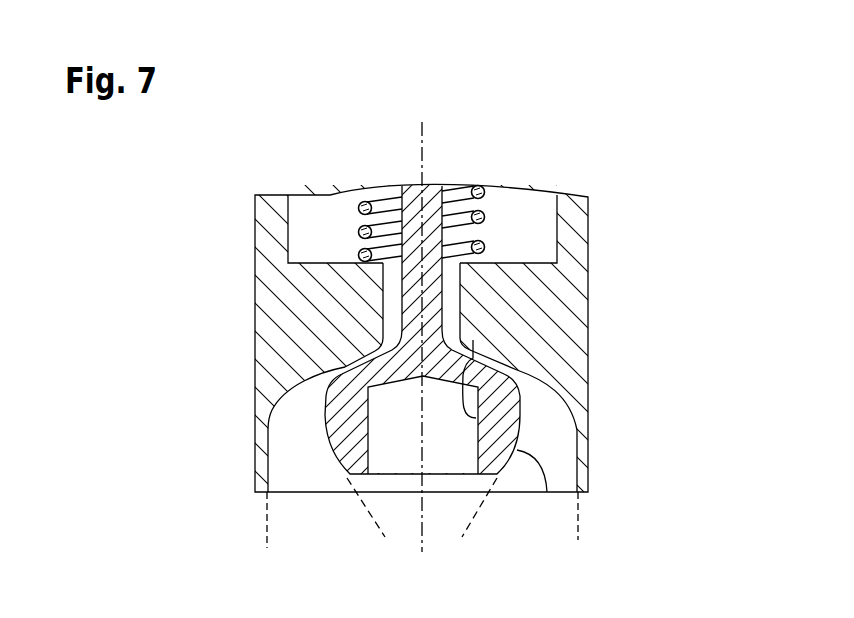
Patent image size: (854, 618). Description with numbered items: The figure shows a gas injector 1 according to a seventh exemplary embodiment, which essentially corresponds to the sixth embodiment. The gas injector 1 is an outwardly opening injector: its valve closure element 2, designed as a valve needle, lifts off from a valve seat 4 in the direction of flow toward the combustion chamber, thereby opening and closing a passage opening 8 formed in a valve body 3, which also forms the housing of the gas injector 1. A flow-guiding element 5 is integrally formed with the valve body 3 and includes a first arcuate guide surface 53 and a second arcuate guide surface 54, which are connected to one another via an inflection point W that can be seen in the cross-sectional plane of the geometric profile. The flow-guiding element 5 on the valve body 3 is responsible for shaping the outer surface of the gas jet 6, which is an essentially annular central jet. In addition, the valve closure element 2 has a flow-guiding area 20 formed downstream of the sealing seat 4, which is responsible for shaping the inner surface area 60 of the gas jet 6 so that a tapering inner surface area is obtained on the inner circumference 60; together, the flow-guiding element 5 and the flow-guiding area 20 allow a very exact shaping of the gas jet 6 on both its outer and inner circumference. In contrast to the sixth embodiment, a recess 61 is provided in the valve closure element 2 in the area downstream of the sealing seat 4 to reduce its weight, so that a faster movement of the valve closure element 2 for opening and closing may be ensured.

The gas injector 1 is at (228, 186).
The valve closure element 2 is at (432, 186).
The valve body 3 is at (270, 246).
The valve seat 4 is at (445, 396).
The flow-guiding element 5 is at (289, 410).
The gas jet 6 is at (267, 543).
The passage opening 8 is at (456, 319).
The flow-guiding area 20 is at (547, 492).
The first arcuate guide surface 53 is at (305, 378).
The second arcuate guide surface 54 is at (268, 436).
The inner surface area 60 is at (482, 503).
The recess 61 is at (476, 418).
The inflection point W is at (295, 390).